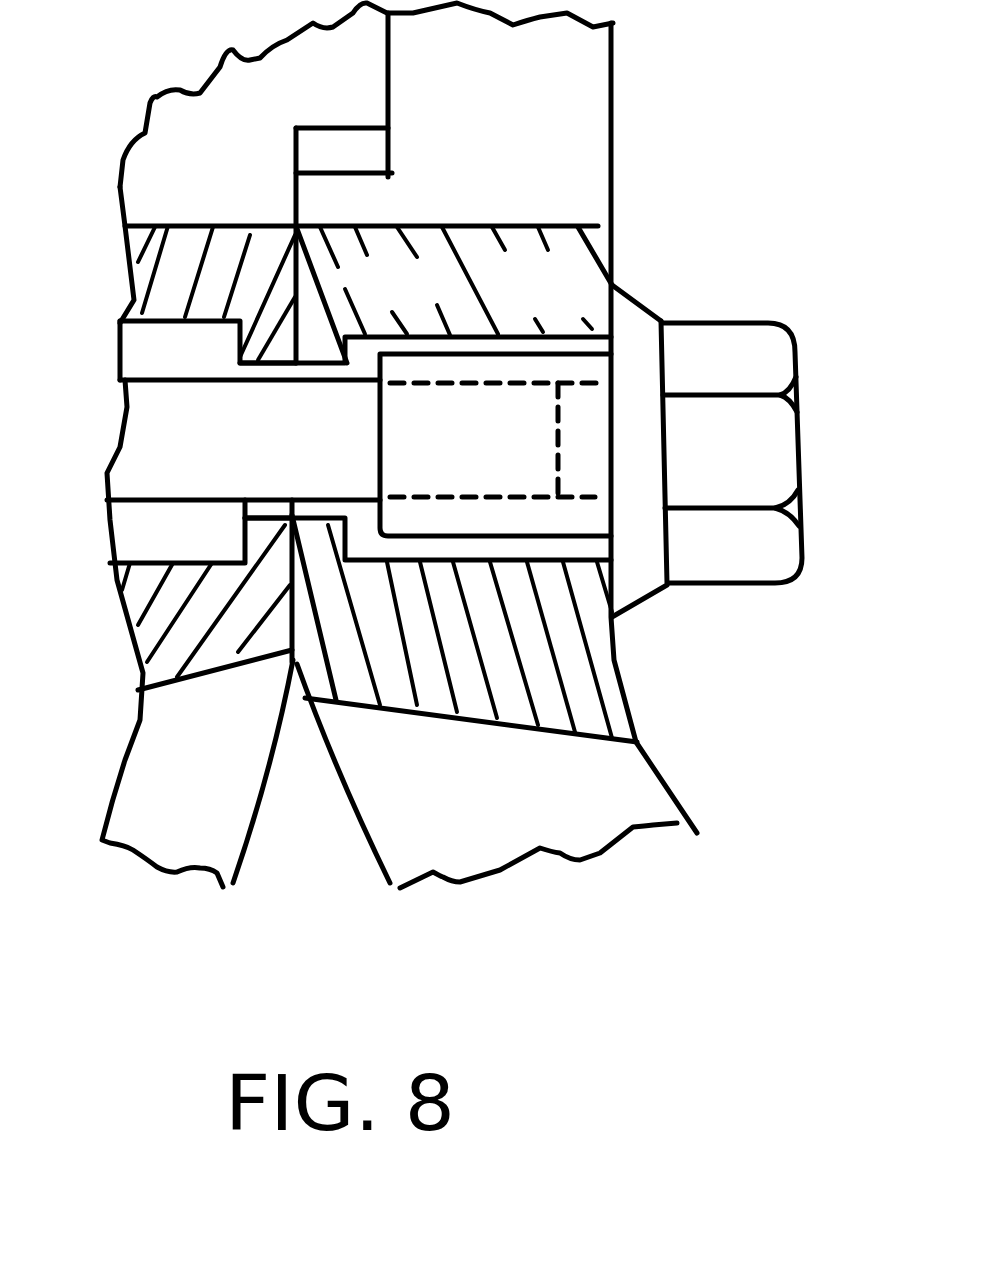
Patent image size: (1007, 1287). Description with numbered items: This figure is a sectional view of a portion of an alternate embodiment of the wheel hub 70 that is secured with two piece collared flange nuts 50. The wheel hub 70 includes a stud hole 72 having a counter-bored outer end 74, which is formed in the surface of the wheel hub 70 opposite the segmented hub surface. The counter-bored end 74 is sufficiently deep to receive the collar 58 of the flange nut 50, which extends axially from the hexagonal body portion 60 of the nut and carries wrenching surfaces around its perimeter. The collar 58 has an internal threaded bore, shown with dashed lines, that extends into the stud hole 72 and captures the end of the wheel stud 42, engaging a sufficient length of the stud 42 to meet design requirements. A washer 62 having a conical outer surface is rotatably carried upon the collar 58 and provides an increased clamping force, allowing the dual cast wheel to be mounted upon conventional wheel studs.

The wheel stud 42 is at (280, 486).
The collared flange nut 50 is at (705, 295).
The collar 58 is at (505, 487).
The hexagonal body portion 60 is at (747, 563).
The washer 62 is at (643, 583).
The wheel hub 70 is at (537, 163).
The stud hole 72 is at (310, 332).
The counter-bored outer end 74 is at (163, 351).